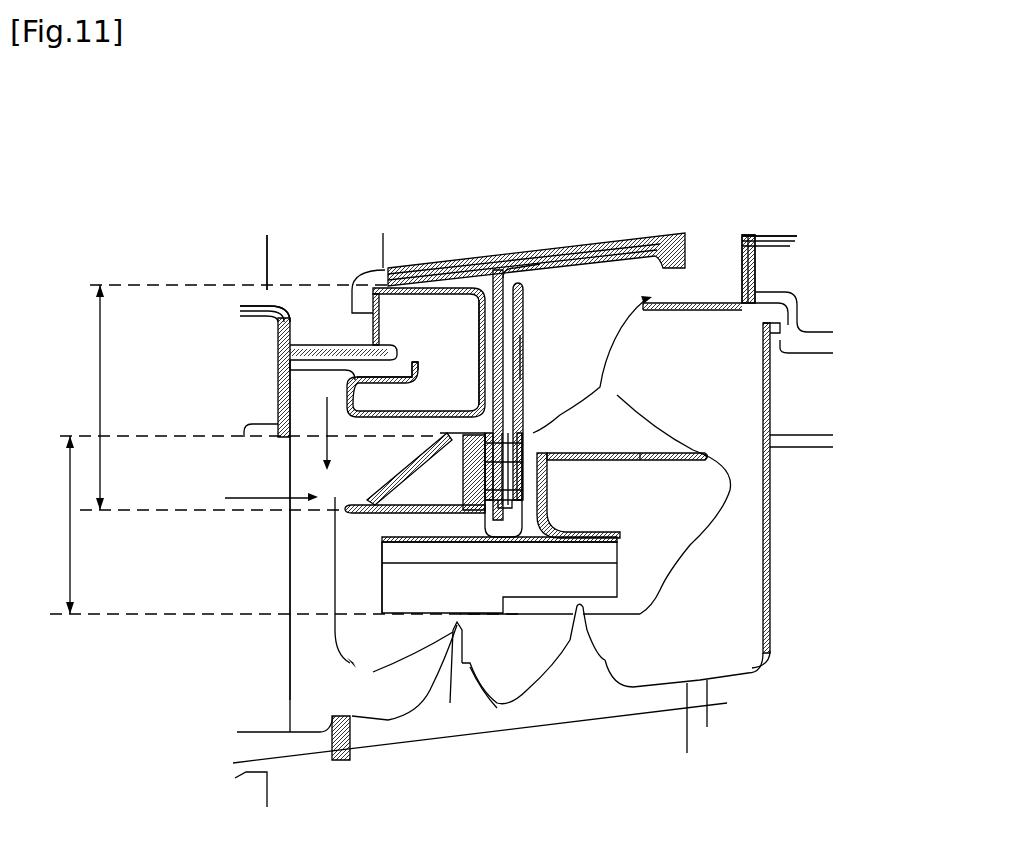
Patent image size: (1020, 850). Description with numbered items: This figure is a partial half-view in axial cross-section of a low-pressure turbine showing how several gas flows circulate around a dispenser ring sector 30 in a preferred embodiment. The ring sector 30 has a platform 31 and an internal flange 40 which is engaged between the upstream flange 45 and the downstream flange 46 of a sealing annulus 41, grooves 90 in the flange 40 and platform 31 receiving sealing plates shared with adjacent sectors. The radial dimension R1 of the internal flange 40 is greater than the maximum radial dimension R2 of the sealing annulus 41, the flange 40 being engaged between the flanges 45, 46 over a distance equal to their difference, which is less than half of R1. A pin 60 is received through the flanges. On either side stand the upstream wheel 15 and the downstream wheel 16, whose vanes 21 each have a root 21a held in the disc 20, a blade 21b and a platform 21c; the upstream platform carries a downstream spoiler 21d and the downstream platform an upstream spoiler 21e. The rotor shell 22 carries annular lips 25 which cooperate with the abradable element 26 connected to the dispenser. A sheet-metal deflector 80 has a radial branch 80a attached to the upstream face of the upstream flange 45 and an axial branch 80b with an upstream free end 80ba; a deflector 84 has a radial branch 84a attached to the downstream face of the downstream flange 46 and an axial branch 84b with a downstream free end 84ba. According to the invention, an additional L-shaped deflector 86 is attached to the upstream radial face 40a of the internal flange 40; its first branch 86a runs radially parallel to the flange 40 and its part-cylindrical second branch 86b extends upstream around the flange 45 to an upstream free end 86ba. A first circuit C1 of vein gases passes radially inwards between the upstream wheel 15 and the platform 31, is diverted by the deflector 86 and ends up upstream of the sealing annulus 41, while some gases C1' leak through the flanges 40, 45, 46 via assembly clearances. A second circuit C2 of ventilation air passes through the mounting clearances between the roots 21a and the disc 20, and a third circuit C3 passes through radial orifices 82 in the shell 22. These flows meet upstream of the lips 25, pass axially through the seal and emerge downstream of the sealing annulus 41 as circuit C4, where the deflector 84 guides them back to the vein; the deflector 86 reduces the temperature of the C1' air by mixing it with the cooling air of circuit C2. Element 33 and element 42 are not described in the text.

The upstream wheel 15 is at (280, 215).
The downstream wheel 16 is at (795, 200).
The disc 20 is at (521, 569).
The vanes 21 is at (257, 335).
The root 21a is at (237, 458).
The blade 21b is at (247, 272).
The platform 21c is at (258, 305).
The downstream spoiler 21d is at (342, 370).
The upstream spoiler 21e is at (710, 310).
The shell 22 is at (540, 715).
The annular lips 25 is at (515, 705).
The abradable element 26 is at (640, 615).
The ring sector 30 is at (518, 333).
The platform 31 is at (518, 247).
The garnish side wall 33 is at (392, 240).
The internal flange 40 is at (534, 395).
The upstream radial face 40a is at (483, 350).
The sealing annulus 41 is at (541, 575).
The support block end face 42 is at (383, 557).
The upstream flange 45 is at (477, 517).
The downstream flange 46 is at (612, 690).
The pin 60 is at (622, 382).
The deflector 80 is at (422, 481).
The radial branch 80a is at (466, 482).
The axial branch 80b is at (425, 513).
The upstream free end 80ba is at (422, 466).
The radial orifices 82 is at (357, 747).
The deflector 84 is at (629, 495).
The radial branch 84a is at (553, 488).
The axial branch 84b is at (647, 462).
The downstream free end 84ba is at (705, 462).
The deflector 86 is at (414, 352).
The first branch 86a is at (468, 388).
The second branch 86b is at (393, 405).
The upstream free end 86ba is at (347, 405).
The grooves 90 is at (505, 300).
The first circuit C1 is at (334, 258).
The leakage gases C1' is at (429, 490).
The second circuit C2 is at (243, 500).
The third circuit C3 is at (350, 697).
The fourth circuit C4 is at (650, 605).
The radial dimension R1 is at (83, 397).
The maximum radial dimension R2 is at (50, 525).